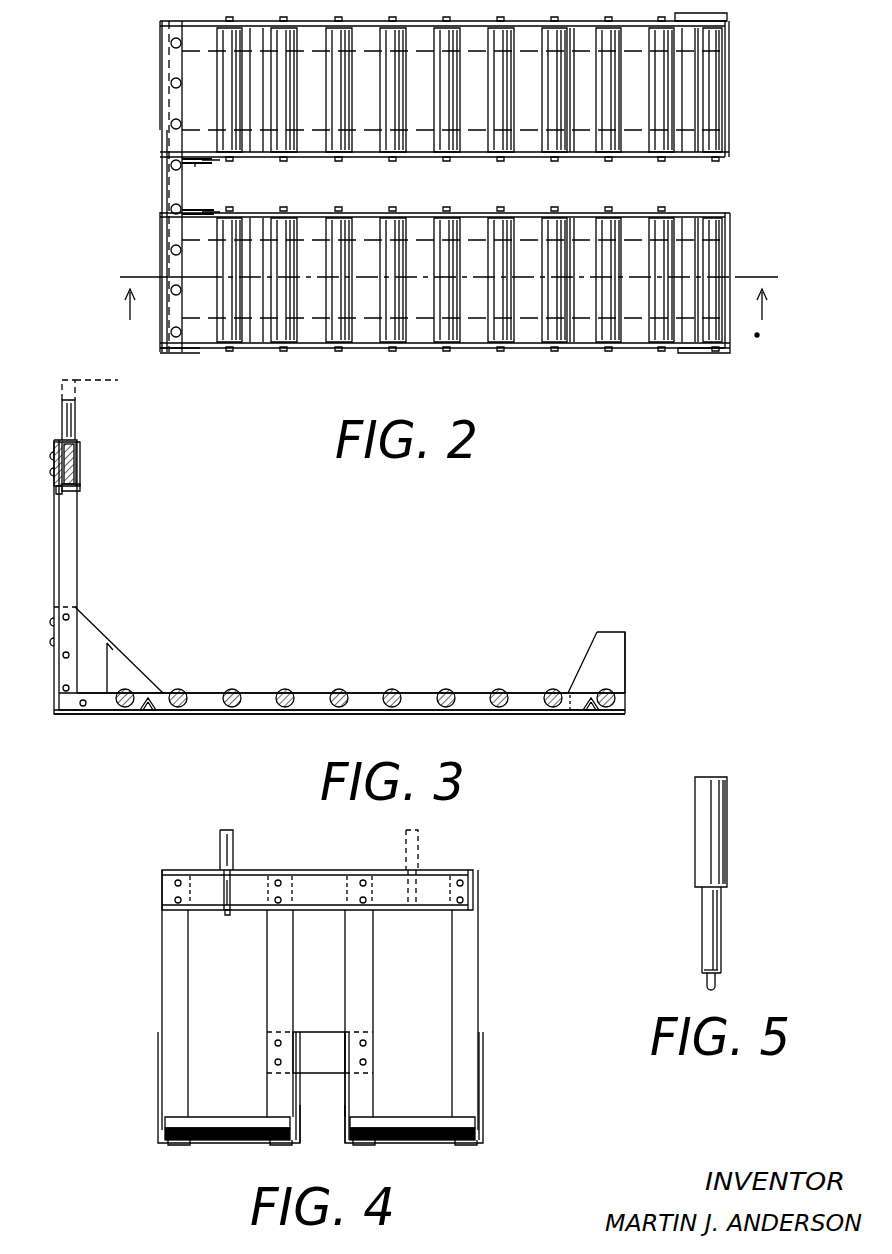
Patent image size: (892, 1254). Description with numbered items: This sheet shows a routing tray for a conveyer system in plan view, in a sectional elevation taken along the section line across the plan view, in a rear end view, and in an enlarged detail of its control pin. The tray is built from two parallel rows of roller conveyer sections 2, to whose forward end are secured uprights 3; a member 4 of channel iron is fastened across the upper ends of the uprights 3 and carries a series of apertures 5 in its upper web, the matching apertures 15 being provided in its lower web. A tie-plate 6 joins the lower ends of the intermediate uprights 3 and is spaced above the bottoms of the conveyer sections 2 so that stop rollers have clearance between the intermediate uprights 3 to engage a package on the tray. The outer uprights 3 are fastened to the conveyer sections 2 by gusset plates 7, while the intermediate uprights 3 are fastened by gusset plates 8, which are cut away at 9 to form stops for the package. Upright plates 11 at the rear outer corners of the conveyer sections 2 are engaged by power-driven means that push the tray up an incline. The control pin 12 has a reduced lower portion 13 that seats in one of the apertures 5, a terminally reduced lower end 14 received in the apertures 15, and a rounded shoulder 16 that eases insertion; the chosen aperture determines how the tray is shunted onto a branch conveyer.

In FIG. 2, the roller conveyer sections 2 is at (718, 106).
In FIG. 3, the roller conveyer sections 2 is at (556, 688).
In FIG. 4, the roller conveyer sections 2 is at (232, 1143).
In FIG. 2, the uprights 3 is at (448, 297).
In FIG. 3, the uprights 3 is at (80, 542).
In FIG. 4, the uprights 3 is at (162, 946).
In FIG. 2, the member of channel iron 4 is at (176, 186).
In FIG. 3, the member of channel iron 4 is at (58, 440).
In FIG. 4, the member of channel iron 4 is at (302, 870).
In FIG. 2, the apertures 5 is at (171, 85).
In FIG. 3, the apertures 5 is at (78, 452).
In FIG. 2, the tie-plate 6 is at (170, 158).
In FIG. 3, the tie-plate 6 is at (55, 610).
In FIG. 4, the tie-plate 6 is at (313, 1032).
In FIG. 2, the gusset plates 7 is at (162, 21).
In FIG. 3, the gusset plates 7 is at (120, 665).
In FIG. 4, the gusset plates 7 is at (158, 1069).
In FIG. 2, the gusset plates 8 is at (200, 212).
In FIG. 3, the gusset plates 8 is at (88, 635).
In FIG. 4, the gusset plates 8 is at (345, 1105).
In FIG. 2, the cut away portion 9 is at (215, 210).
In FIG. 3, the cut away portion 9 is at (105, 645).
In FIG. 2, the upright plates 11 is at (727, 20).
In FIG. 3, the upright plates 11 is at (610, 633).
In FIG. 3, the control pin 12 is at (76, 418).
In FIG. 4, the control pin 12 is at (234, 842).
In FIG. 5, the control pin 12 is at (727, 842).
In FIG. 3, the reduced lower portion 13 is at (76, 466).
In FIG. 4, the reduced lower portion 13 is at (418, 888).
In FIG. 5, the reduced lower portion 13 is at (721, 918).
In FIG. 3, the lower end 14 is at (74, 488).
In FIG. 4, the lower end 14 is at (410, 912).
In FIG. 5, the lower end 14 is at (718, 980).
In FIG. 3, the apertures 15 is at (62, 492).
In FIG. 5, the shoulder 16 is at (705, 976).